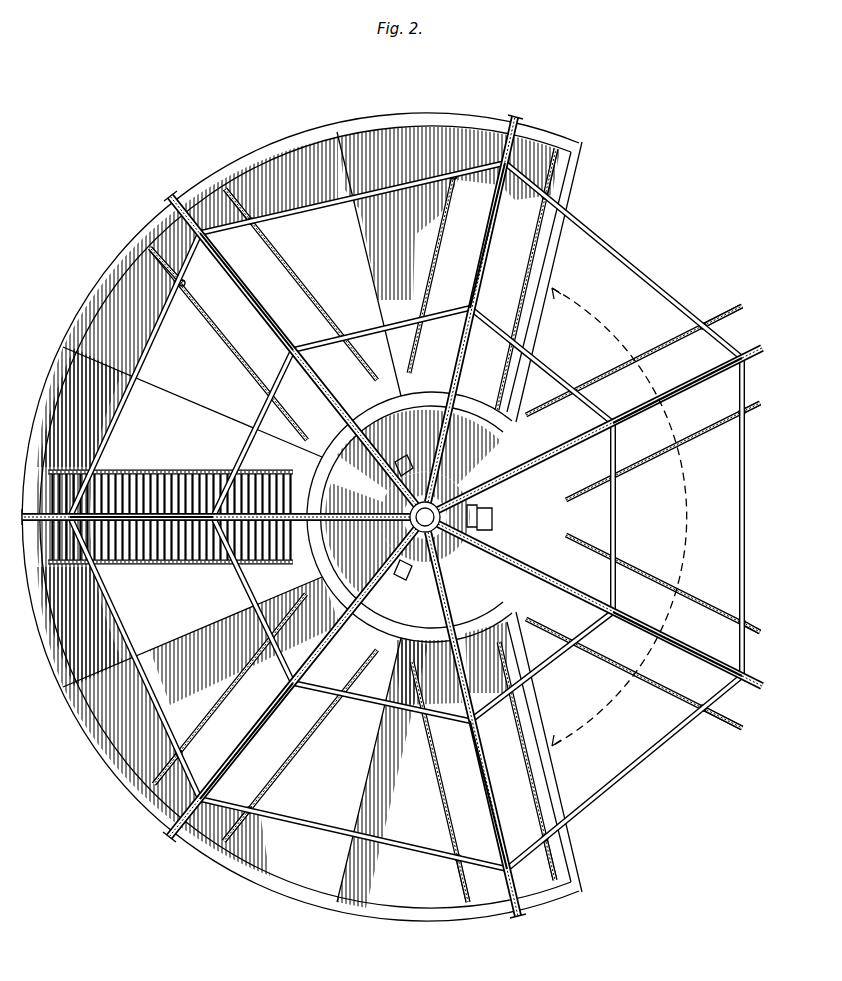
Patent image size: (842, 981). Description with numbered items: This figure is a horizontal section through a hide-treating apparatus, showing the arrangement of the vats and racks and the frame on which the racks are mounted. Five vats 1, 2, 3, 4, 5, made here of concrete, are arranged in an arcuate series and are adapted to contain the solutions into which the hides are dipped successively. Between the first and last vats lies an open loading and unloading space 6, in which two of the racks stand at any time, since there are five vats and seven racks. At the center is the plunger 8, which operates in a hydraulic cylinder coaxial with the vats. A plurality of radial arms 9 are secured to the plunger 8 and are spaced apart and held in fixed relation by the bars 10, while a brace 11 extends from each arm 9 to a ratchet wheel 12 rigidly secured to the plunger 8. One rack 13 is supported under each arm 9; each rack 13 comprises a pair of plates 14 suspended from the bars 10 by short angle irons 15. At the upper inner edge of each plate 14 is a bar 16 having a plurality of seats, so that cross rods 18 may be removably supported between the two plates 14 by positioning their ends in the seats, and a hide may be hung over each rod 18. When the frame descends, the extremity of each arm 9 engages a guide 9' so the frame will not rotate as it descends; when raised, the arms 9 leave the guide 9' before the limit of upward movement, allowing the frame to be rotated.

The vat 1 is at (402, 905).
The vat 2 is at (290, 878).
The vat 3 is at (80, 660).
The vat 4 is at (105, 312).
The vat 5 is at (410, 128).
The loading and unloading space 6 is at (662, 545).
The plunger 8 is at (425, 517).
The radial arm 9 is at (392, 516).
The guide 9' is at (288, 516).
The bar 10 is at (106, 444).
The brace 11 is at (245, 292).
The ratchet wheel 12 is at (405, 457).
The rack 13 is at (290, 737).
The plate 14 is at (262, 380).
The angle iron 15 is at (690, 322).
The bar 16 is at (322, 298).
The cross rod 18 is at (60, 475).